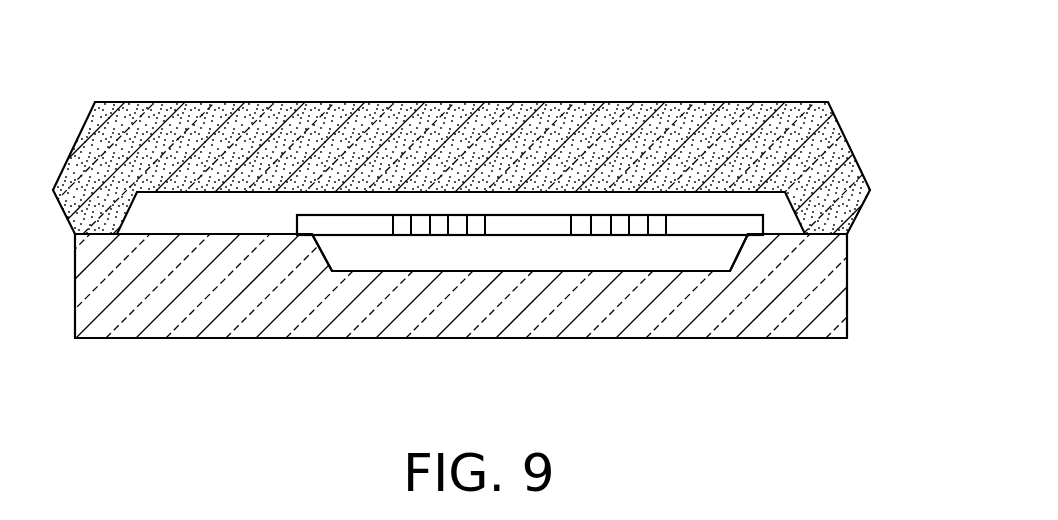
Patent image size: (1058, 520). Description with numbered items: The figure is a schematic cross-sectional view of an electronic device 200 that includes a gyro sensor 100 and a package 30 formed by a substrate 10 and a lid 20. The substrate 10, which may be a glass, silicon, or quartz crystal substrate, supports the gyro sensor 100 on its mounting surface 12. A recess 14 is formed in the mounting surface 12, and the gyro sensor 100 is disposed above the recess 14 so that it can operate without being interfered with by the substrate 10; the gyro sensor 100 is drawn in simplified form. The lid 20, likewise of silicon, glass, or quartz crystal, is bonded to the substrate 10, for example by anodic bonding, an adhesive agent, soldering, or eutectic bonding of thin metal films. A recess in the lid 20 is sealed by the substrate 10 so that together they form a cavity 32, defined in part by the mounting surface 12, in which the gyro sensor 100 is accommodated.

The electronic device 200 is at (497, 199).
The package 30 is at (497, 218).
The lid 20 is at (832, 217).
The substrate 10 is at (832, 273).
The mounting surface 12 is at (247, 233).
The recess 14 is at (545, 255).
The cavity 32 is at (622, 203).
The gyro sensor 100 is at (378, 227).